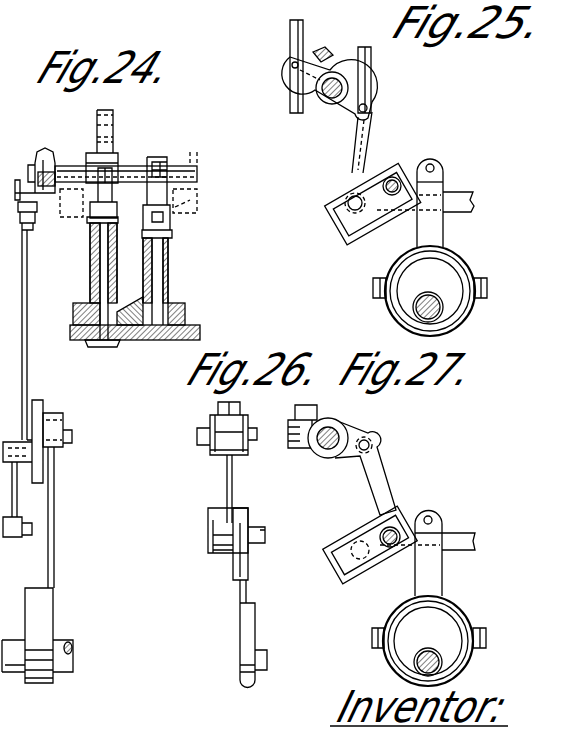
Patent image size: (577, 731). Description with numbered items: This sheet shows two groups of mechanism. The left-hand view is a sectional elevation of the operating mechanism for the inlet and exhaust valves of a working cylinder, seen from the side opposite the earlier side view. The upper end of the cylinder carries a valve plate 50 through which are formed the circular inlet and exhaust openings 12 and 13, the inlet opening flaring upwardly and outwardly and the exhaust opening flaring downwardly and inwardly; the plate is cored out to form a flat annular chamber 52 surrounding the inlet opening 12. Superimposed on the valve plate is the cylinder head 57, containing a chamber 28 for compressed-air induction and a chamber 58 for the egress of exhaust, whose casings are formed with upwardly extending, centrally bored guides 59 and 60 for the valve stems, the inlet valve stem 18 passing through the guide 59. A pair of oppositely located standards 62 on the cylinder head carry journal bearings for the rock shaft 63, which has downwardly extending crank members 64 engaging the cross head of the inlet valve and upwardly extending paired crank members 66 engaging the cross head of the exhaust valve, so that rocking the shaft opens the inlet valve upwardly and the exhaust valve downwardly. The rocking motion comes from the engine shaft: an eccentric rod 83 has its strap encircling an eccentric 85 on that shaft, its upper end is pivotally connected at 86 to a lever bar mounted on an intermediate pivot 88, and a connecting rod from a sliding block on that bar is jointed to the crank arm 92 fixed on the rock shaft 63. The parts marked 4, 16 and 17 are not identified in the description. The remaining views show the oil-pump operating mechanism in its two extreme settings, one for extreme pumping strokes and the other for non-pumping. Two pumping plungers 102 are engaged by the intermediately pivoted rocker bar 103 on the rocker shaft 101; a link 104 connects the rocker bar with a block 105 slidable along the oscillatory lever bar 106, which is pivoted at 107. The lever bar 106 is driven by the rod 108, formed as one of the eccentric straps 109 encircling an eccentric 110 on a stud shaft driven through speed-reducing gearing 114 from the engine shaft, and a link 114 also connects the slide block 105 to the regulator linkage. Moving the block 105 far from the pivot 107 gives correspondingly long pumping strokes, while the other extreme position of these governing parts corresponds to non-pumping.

In FIG. 24, the cross bar 4 is at (72, 645).
In FIG. 24, the inlet opening 12 is at (160, 335).
In FIG. 24, the exhaust opening 13 is at (88, 333).
In FIG. 24, the washer 16 is at (118, 340).
In FIG. 24, the flange 17 is at (100, 342).
In FIG. 24, the inlet valve stem 18 is at (168, 262).
In FIG. 24, the compressed air induction chamber 28 is at (175, 313).
In FIG. 24, the valve plate 50 is at (187, 326).
In FIG. 24, the flat annular chamber 52 is at (180, 342).
In FIG. 24, the cylinder head 57 is at (170, 297).
In FIG. 24, the exhaust chamber 58 is at (88, 314).
In FIG. 24, the inlet valve stem guide 59 is at (102, 268).
In FIG. 24, the exhaust valve stem guide 60 is at (170, 272).
In FIG. 24, the standard 62 is at (175, 207).
In FIG. 24, the rock shaft 63 is at (125, 170).
In FIG. 24, the downwardly extending crank member 64 is at (148, 190).
In FIG. 24, the upwardly extending crank member 66 is at (113, 158).
In FIG. 24, the eccentric rod 83 is at (54, 527).
In FIG. 24, the eccentric 85 is at (50, 615).
In FIG. 24, the pivotal connection 86 is at (43, 413).
In FIG. 24, the lever bar pivot 88 is at (72, 437).
In FIG. 24, the crank arm 92 is at (32, 198).
In FIG. 25, the rocker shaft 101 is at (318, 107).
In FIG. 26, the rocker shaft 101 is at (200, 447).
In FIG. 27, the rocker shaft 101 is at (333, 438).
In FIG. 25, the pumping plunger 102 is at (291, 33).
In FIG. 25, the rocker bar 103 is at (340, 110).
In FIG. 25, the link 104 is at (366, 168).
In FIG. 25, the slide block 105 is at (350, 183).
In FIG. 26, the slide block 105 is at (227, 556).
In FIG. 27, the slide block 105 is at (368, 492).
In FIG. 25, the oscillatory lever bar 106 is at (403, 163).
In FIG. 26, the oscillatory lever bar 106 is at (246, 563).
In FIG. 27, the oscillatory lever bar 106 is at (353, 578).
In FIG. 25, the lever bar pivot 107 is at (393, 199).
In FIG. 26, the lever bar pivot 107 is at (245, 515).
In FIG. 27, the lever bar pivot 107 is at (403, 517).
In FIG. 25, the rod 108 is at (437, 227).
In FIG. 26, the rod 108 is at (243, 600).
In FIG. 27, the rod 108 is at (433, 573).
In FIG. 25, the eccentric strap 109 is at (395, 265).
In FIG. 27, the eccentric strap 109 is at (457, 607).
In FIG. 25, the eccentric 110 is at (412, 292).
In FIG. 27, the eccentric 110 is at (412, 632).
In FIG. 25, the link 114 is at (450, 196).